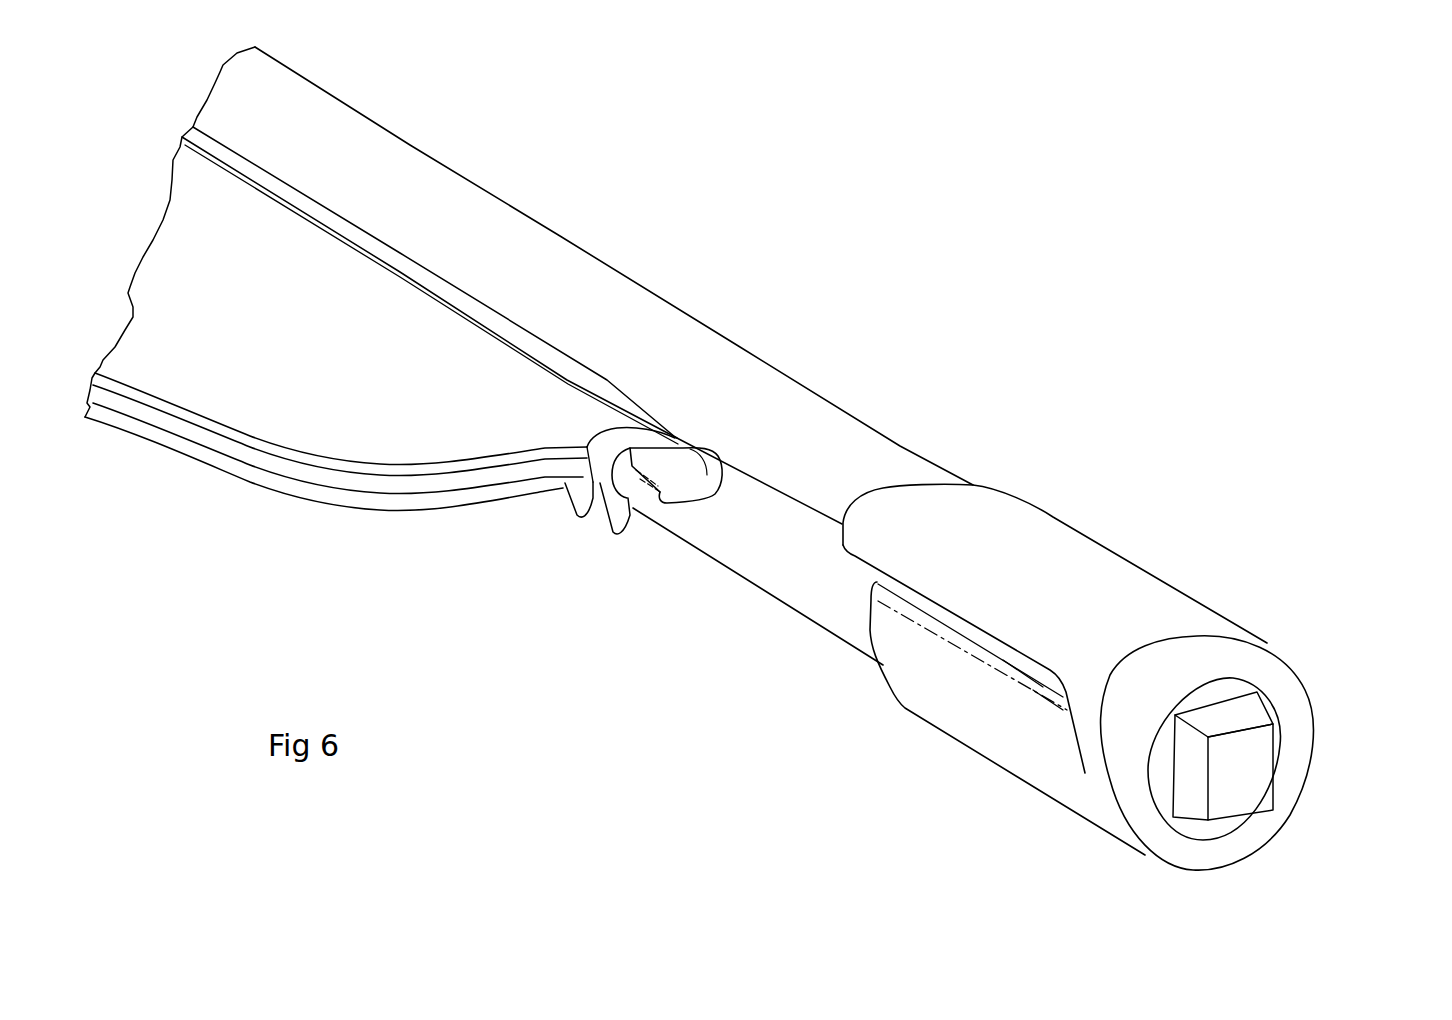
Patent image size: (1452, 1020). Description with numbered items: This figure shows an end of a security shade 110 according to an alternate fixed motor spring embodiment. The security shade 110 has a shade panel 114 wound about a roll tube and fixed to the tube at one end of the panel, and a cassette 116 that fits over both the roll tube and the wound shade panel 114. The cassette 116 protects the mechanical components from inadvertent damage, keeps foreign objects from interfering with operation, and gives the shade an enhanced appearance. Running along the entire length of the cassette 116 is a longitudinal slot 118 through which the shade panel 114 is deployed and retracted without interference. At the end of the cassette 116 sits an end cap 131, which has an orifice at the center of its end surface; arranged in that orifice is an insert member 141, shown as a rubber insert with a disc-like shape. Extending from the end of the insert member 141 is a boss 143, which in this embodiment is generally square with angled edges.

The security shade 110 is at (943, 315).
The shade panel 114 is at (410, 447).
The cassette 116 is at (888, 452).
The longitudinal slot 118 is at (745, 537).
The end cap 131 is at (1070, 575).
The insert member 141 is at (1308, 695).
The boss 143 is at (1260, 790).